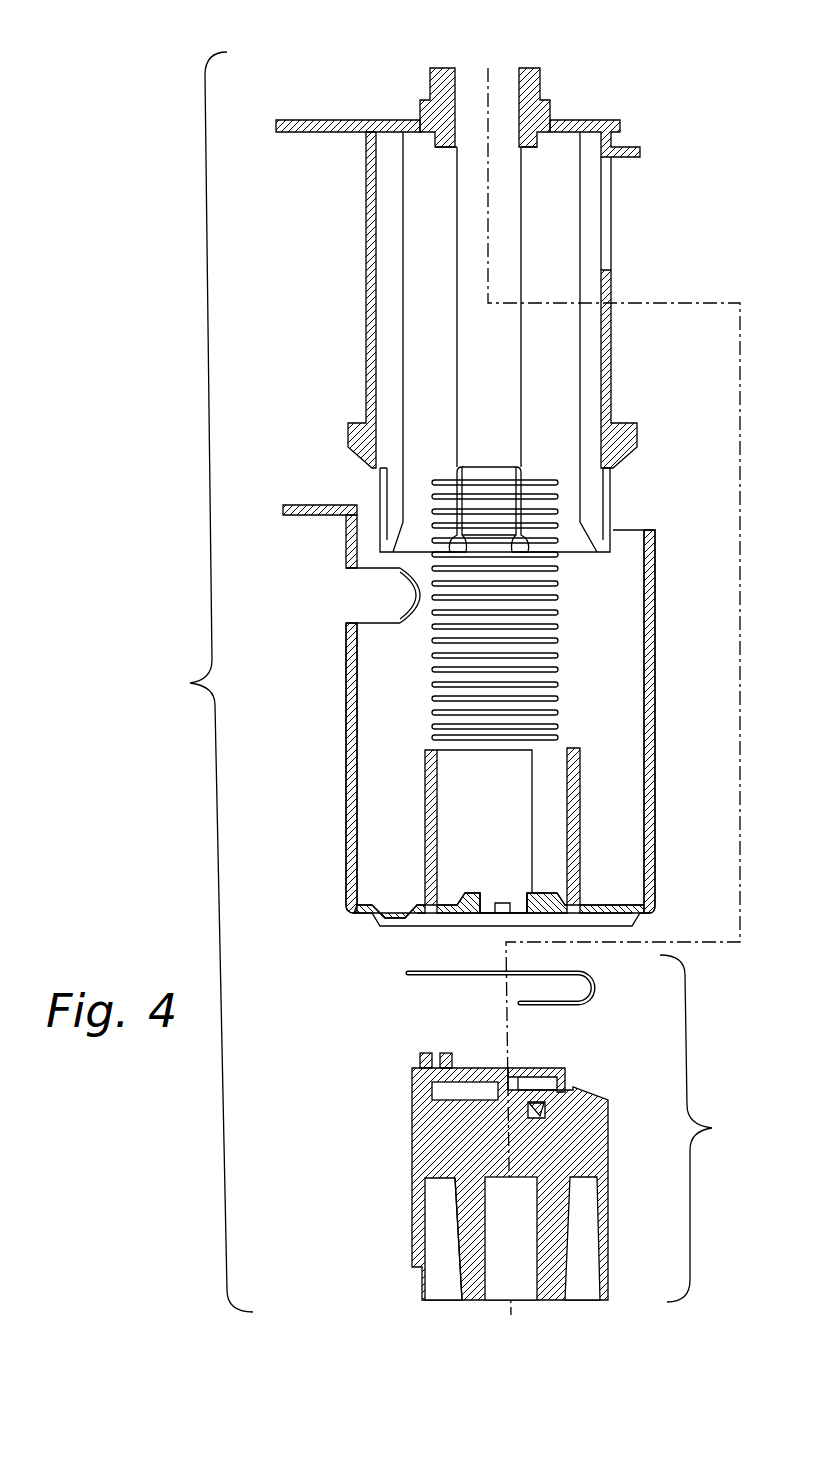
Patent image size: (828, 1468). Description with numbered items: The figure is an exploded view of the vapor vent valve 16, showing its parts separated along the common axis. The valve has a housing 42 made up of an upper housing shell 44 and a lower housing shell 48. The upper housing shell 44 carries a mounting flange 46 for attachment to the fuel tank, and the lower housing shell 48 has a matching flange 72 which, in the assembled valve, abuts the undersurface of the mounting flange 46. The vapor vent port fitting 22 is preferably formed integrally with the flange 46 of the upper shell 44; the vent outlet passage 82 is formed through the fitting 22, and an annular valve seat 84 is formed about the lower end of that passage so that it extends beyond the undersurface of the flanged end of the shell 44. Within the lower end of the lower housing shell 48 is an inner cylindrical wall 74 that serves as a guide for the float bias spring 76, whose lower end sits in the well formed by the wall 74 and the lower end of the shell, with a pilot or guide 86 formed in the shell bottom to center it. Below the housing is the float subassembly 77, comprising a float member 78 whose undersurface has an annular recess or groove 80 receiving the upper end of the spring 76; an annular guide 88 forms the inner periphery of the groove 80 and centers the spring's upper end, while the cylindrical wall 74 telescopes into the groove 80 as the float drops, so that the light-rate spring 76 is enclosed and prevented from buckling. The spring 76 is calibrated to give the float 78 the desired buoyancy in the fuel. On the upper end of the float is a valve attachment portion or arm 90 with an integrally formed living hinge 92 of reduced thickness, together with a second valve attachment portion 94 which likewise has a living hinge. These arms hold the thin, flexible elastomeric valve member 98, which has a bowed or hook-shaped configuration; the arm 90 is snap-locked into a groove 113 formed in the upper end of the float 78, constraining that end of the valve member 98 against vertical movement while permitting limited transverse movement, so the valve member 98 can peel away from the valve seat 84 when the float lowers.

The vapor vent valve 16 is at (206, 682).
The vapor vent port fitting 22 is at (526, 68).
The housing 42 is at (298, 472).
The upper housing shell 44 is at (366, 308).
The mounting flange 46 is at (323, 120).
The lower housing shell 48 is at (346, 782).
The matching flange 72 is at (325, 518).
The inner cylindrical wall 74 is at (580, 798).
The float bias spring 76 is at (565, 655).
The float subassembly 77 is at (703, 1128).
The float member 78 is at (412, 1140).
The annular recess or groove 80 is at (442, 1180).
The vent outlet passage 82 is at (458, 97).
The annular valve seat 84 is at (520, 147).
The pilot or guide 86 is at (558, 897).
The annular guide 88 is at (462, 1237).
The valve attachment portion or arm 90 is at (566, 1074).
The living hinge 92 is at (518, 1067).
The second valve attachment portion 94 is at (426, 1053).
The valve member 98 is at (440, 972).
The groove 113 is at (560, 1106).